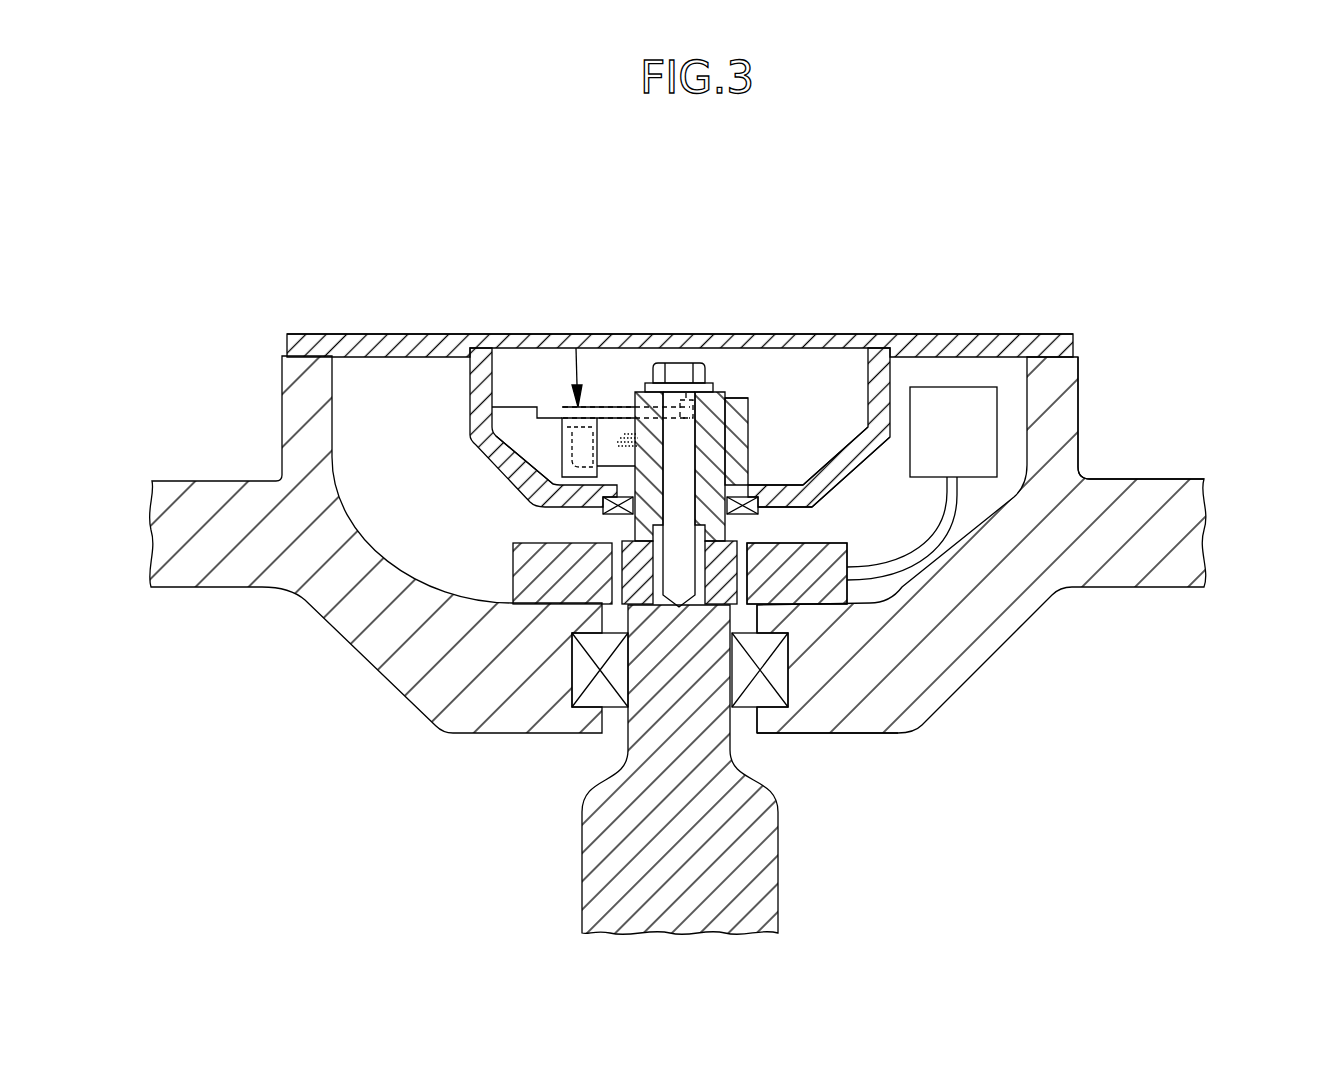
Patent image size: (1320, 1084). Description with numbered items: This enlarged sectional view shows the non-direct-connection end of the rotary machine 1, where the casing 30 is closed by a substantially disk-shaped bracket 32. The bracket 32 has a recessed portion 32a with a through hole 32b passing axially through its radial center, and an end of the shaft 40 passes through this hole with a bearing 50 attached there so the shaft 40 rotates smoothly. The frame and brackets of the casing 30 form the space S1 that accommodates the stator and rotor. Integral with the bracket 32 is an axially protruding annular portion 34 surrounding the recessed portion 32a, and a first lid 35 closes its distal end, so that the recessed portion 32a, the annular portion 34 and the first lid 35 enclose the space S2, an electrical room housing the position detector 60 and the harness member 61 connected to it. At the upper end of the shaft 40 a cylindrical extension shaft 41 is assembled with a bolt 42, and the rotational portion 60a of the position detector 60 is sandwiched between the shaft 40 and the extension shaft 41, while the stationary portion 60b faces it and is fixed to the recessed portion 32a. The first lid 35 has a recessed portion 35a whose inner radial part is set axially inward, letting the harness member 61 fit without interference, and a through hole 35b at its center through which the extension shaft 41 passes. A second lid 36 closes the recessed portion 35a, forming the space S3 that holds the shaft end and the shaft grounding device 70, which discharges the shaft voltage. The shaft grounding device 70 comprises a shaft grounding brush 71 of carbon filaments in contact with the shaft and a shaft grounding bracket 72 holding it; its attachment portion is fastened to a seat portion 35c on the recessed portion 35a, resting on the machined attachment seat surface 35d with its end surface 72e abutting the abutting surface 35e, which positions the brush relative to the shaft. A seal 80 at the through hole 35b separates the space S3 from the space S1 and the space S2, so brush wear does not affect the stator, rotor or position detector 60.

The rotary machine 1 is at (1045, 196).
The casing 30 is at (1165, 473).
The bracket 32 is at (1107, 477).
The recessed portion 32a is at (860, 693).
The through hole 32b is at (747, 717).
The annular portion 34 is at (1067, 413).
The first lid 35 is at (980, 340).
The recessed portion 35a is at (812, 467).
The through hole 35b is at (757, 483).
The seat portion 35c is at (510, 407).
The attachment seat surface 35d is at (550, 418).
The abutting surface 35e is at (658, 395).
The second lid 36 is at (652, 400).
The shaft 40 is at (760, 867).
The extension shaft 41 is at (730, 450).
The bolt 42 is at (685, 360).
The bearing 50 is at (572, 667).
The position detector 60 is at (1102, 647).
The rotational portion 60a is at (822, 600).
The stationary portion 60b is at (712, 593).
The harness member 61 is at (977, 453).
The shaft grounding device 70 is at (576, 348).
The shaft grounding brush 71 is at (622, 430).
The shaft grounding bracket 72 is at (560, 445).
The end surface 72e is at (728, 395).
The seal 80 is at (762, 520).
The space S1 is at (968, 861).
The space S2 is at (1013, 382).
The space S3 is at (845, 372).